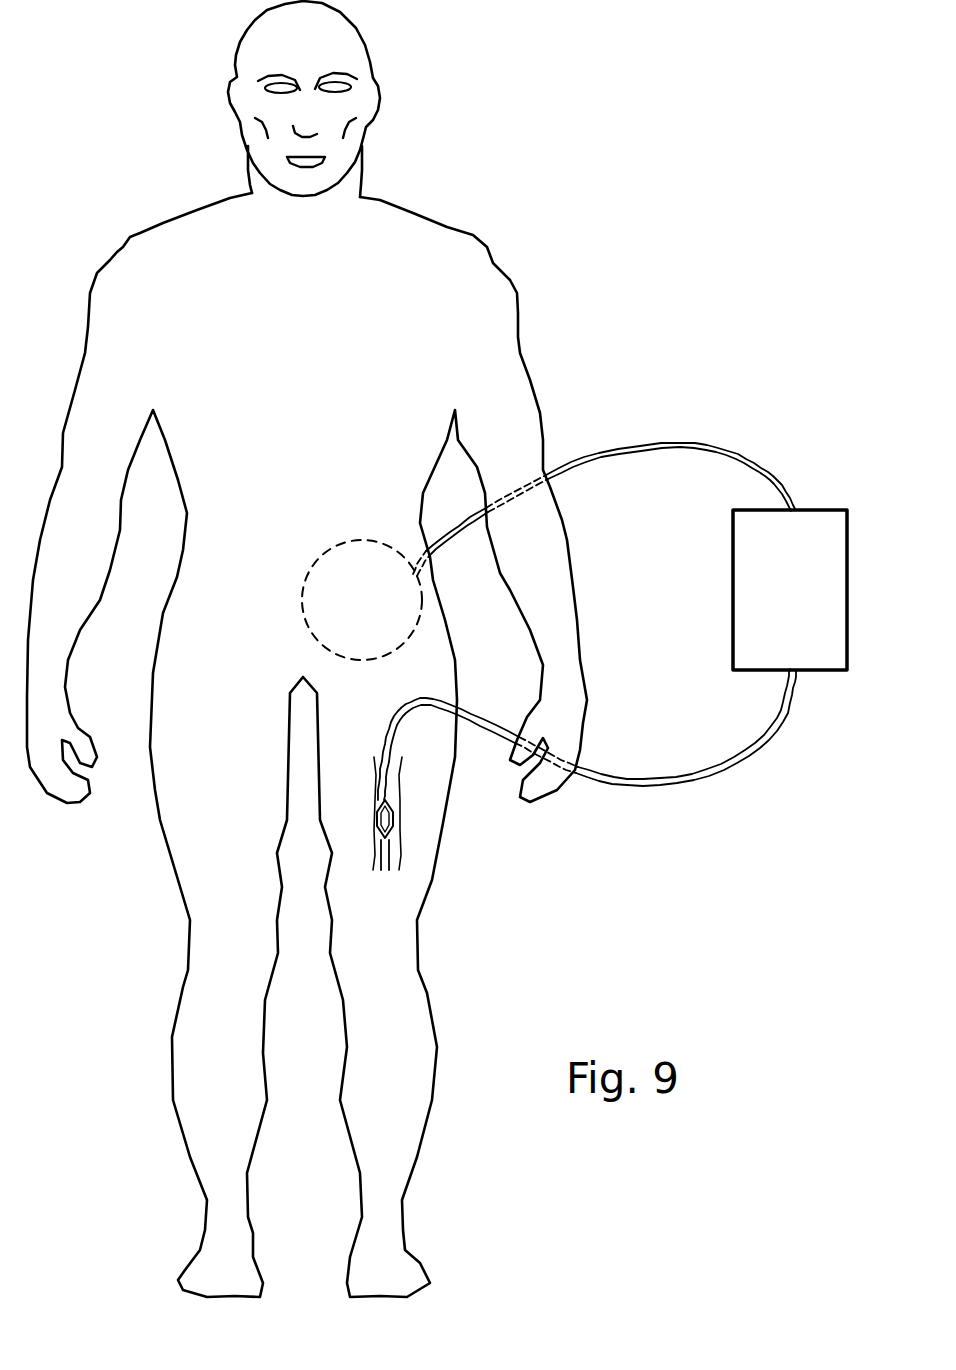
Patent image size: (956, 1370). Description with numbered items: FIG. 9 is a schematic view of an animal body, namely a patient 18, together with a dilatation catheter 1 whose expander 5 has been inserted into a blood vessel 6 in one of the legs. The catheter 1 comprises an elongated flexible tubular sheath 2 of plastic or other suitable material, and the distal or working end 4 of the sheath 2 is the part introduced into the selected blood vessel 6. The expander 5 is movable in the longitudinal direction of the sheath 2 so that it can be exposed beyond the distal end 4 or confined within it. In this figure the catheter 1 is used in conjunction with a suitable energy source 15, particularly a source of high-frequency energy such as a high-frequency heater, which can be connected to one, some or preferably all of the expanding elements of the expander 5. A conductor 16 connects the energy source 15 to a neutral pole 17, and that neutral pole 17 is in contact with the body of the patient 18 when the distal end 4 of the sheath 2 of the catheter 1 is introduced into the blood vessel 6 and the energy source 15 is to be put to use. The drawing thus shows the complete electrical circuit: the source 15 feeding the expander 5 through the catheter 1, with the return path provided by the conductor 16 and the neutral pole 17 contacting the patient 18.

The dilatation catheter 1 is at (632, 806).
The tubular sheath 2 is at (402, 730).
The distal end 4 is at (393, 790).
The expander 5 is at (397, 823).
The blood vessel 6 is at (373, 782).
The energy source 15 is at (812, 607).
The conductor 16 is at (605, 455).
The neutral pole 17 is at (332, 537).
The patient 18 is at (412, 203).